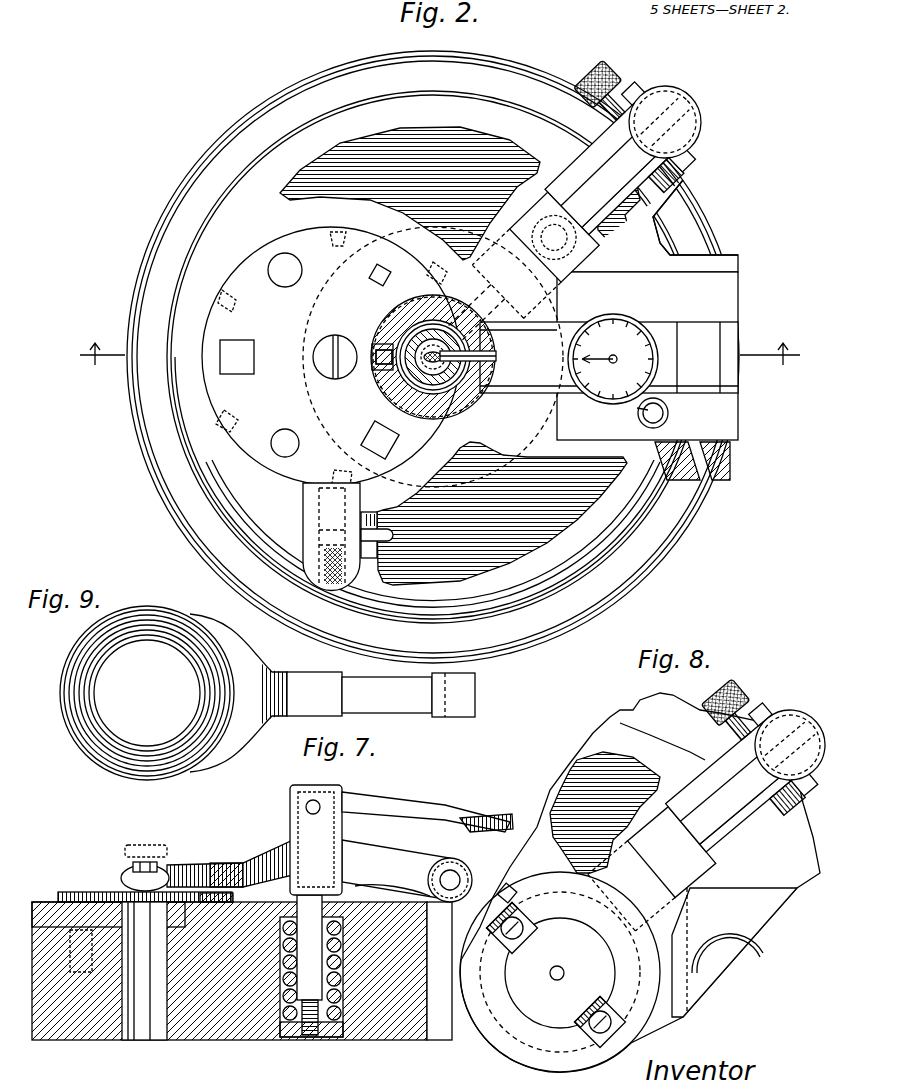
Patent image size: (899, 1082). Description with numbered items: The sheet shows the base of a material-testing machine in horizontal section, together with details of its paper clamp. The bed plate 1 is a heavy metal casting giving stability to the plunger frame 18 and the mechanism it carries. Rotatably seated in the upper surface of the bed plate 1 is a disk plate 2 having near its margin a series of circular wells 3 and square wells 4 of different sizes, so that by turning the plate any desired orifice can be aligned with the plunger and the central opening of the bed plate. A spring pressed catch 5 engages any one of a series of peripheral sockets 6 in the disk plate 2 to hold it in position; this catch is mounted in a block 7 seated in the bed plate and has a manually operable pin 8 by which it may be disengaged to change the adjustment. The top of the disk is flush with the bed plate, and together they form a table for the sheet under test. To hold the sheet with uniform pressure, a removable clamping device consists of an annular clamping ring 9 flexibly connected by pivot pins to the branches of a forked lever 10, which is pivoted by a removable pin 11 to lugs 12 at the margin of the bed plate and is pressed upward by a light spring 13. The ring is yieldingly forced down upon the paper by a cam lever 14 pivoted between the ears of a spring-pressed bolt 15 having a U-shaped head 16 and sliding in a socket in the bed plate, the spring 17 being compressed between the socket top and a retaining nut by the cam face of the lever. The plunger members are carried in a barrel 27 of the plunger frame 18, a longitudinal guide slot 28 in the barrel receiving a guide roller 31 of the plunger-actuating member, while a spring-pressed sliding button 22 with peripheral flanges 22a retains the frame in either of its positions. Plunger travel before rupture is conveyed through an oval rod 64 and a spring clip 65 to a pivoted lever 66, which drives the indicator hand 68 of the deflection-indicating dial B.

In FIG. 2, the bed plate 1 is at (187, 430).
In FIG. 7, the bed plate 1 is at (78, 1018).
In FIG. 8, the bed plate 1 is at (565, 778).
In FIG. 2, the disk plate 2 is at (262, 456).
In FIG. 7, the disk plate 2 is at (42, 902).
In FIG. 8, the disk plate 2 is at (482, 1022).
In FIG. 2, the circular wells 3 is at (283, 285).
In FIG. 7, the circular wells 3 is at (148, 930).
In FIG. 8, the circular wells 3 is at (557, 981).
In FIG. 2, the square wells 4 is at (254, 352).
In FIG. 8, the square wells 4 is at (502, 898).
In FIG. 2, the spring pressed catch 5 is at (319, 504).
In FIG. 2, the peripheral sockets 6 is at (338, 232).
In FIG. 2, the block 7 is at (303, 543).
In FIG. 2, the manually operable pin 8 is at (388, 537).
In FIG. 9, the annular clamping ring 9 is at (85, 735).
In FIG. 7, the annular clamping ring 9 is at (78, 892).
In FIG. 8, the annular clamping ring 9 is at (508, 1028).
In FIG. 9, the forked lever 10 is at (232, 736).
In FIG. 7, the forked lever 10 is at (222, 864).
In FIG. 8, the forked lever 10 is at (585, 862).
In FIG. 2, the removable pin 11 is at (610, 82).
In FIG. 7, the removable pin 11 is at (458, 876).
In FIG. 8, the removable pin 11 is at (738, 700).
In FIG. 2, the lugs 12 is at (640, 96).
In FIG. 7, the lugs 12 is at (468, 876).
In FIG. 8, the lugs 12 is at (767, 718).
In FIG. 2, the light spring 13 is at (585, 168).
In FIG. 7, the light spring 13 is at (395, 886).
In FIG. 8, the light spring 13 is at (710, 788).
In FIG. 2, the cam lever 14 is at (690, 108).
In FIG. 7, the cam lever 14 is at (415, 808).
In FIG. 8, the cam lever 14 is at (752, 780).
In FIG. 2, the spring-pressed bolt 15 is at (520, 272).
In FIG. 7, the spring-pressed bolt 15 is at (322, 896).
In FIG. 2, the U-shaped head 16 is at (526, 198).
In FIG. 7, the U-shaped head 16 is at (330, 860).
In FIG. 8, the U-shaped head 16 is at (665, 840).
In FIG. 7, the spring 17 is at (284, 920).
In FIG. 2, the plunger frame 18 is at (567, 340).
In FIG. 8, the plunger frame 18 is at (692, 945).
In FIG. 2, the spring-pressed sliding button 22 is at (663, 414).
In FIG. 2, the peripheral flanges 22a is at (640, 412).
In FIG. 2, the barrel 27 is at (392, 392).
In FIG. 2, the longitudinal guide slot 28 is at (378, 346).
In FIG. 2, the guide roller 31 is at (378, 366).
In FIG. 2, the oval rod 64 is at (440, 352).
In FIG. 2, the spring clip 65 is at (430, 370).
In FIG. 2, the pivoted lever 66 is at (488, 354).
In FIG. 2, the indicator hand 68 is at (600, 382).
In FIG. 2, the deflection-indicating dial B is at (613, 314).
In FIG. 8, the deflection-indicating dial B is at (742, 935).